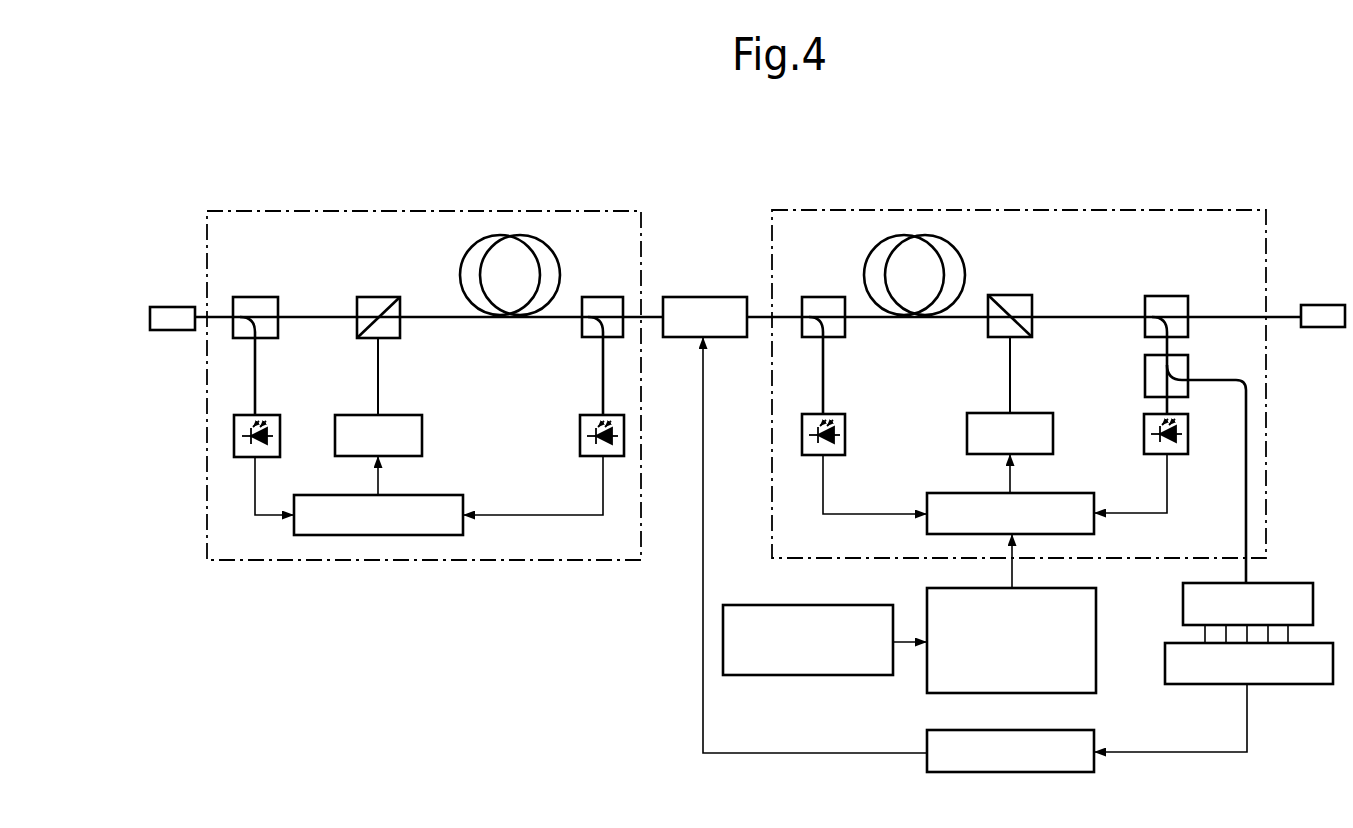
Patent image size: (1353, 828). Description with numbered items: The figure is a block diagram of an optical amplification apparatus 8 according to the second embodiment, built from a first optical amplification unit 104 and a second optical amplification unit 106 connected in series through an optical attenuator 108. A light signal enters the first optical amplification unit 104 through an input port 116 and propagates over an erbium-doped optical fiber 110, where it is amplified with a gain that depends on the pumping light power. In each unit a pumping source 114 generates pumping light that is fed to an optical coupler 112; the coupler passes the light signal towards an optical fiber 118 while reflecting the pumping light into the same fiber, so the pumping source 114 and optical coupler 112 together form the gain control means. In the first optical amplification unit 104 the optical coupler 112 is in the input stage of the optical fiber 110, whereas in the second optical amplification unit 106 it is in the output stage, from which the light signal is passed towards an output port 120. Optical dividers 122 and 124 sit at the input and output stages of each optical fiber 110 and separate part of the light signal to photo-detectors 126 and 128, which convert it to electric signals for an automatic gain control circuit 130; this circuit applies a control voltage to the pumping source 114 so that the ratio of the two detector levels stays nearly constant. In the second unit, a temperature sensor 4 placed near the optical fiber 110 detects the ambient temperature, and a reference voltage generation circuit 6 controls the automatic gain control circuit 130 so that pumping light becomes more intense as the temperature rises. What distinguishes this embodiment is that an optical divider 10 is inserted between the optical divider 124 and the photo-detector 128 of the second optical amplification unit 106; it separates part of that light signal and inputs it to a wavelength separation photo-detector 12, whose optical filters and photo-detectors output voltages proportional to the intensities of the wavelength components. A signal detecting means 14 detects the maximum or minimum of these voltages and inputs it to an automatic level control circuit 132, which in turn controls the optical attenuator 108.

The temperature sensor 4 is at (858, 605).
The reference voltage generation circuit 6 is at (1096, 603).
The optical amplification apparatus 8 is at (505, 153).
The optical divider 10 is at (1190, 362).
The wavelength separation photo-detector 12 is at (1297, 583).
The signal detecting means 14 is at (1313, 684).
The first optical amplification unit 104 is at (333, 211).
The second optical amplification unit 106 is at (843, 210).
The optical attenuator 108 is at (717, 297).
The optical fiber 110 is at (711, 234).
The optical coupler 112 is at (378, 297).
The pumping source 114 is at (410, 415).
The input port 116 is at (168, 307).
The optical fiber 118 is at (482, 237).
The output port 120 is at (1325, 305).
The optical divider 122 is at (255, 297).
The optical divider 124 is at (603, 297).
The photo-detector 126 is at (277, 415).
The photo-detector 128 is at (582, 415).
The automatic gain control circuit 130 is at (445, 495).
The automatic level control circuit 132 is at (1088, 730).